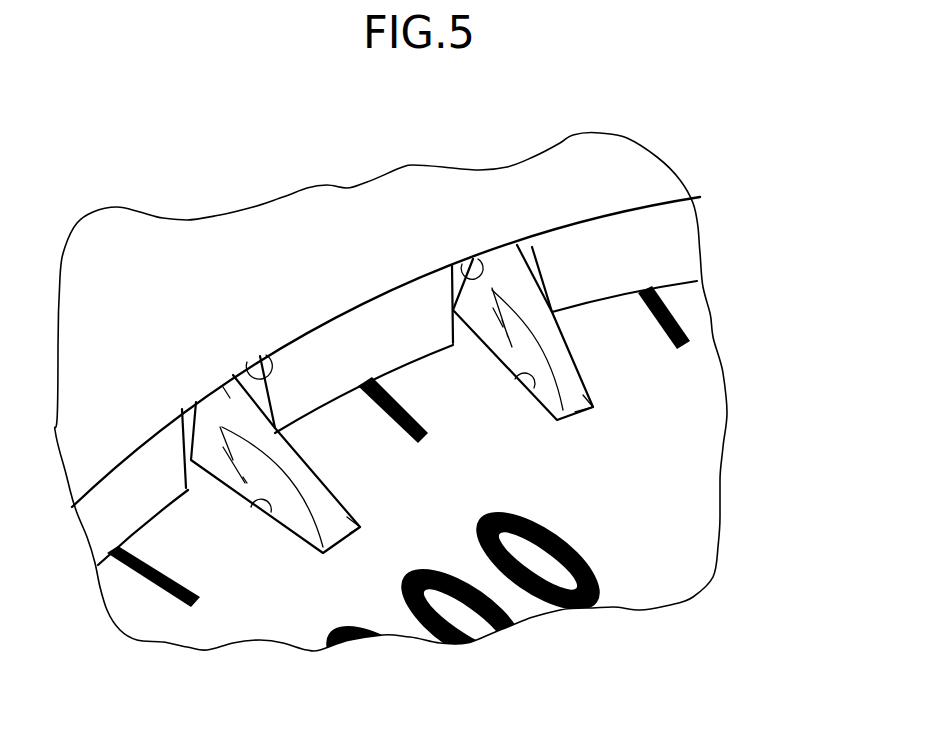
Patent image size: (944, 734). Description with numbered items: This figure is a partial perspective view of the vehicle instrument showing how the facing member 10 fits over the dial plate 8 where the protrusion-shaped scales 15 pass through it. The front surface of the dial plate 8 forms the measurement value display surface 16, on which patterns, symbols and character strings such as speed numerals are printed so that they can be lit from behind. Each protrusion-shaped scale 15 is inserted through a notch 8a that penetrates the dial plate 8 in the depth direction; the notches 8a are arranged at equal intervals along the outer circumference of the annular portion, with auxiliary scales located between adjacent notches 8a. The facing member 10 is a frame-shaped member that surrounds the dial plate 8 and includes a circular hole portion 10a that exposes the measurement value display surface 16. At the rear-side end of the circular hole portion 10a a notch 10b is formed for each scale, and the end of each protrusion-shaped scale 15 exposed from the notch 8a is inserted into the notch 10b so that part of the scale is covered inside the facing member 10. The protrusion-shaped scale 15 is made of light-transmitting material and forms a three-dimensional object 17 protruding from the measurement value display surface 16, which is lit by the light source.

The dial plate 8 is at (426, 433).
The notch 8a is at (268, 514).
The facing member 10 is at (422, 326).
The circular hole portion 10a is at (633, 253).
The notch 10b is at (271, 352).
The protrusion-shaped scale 15 is at (364, 352).
The three-dimensional object 17 is at (229, 398).
The measurement value display surface 16 is at (632, 493).